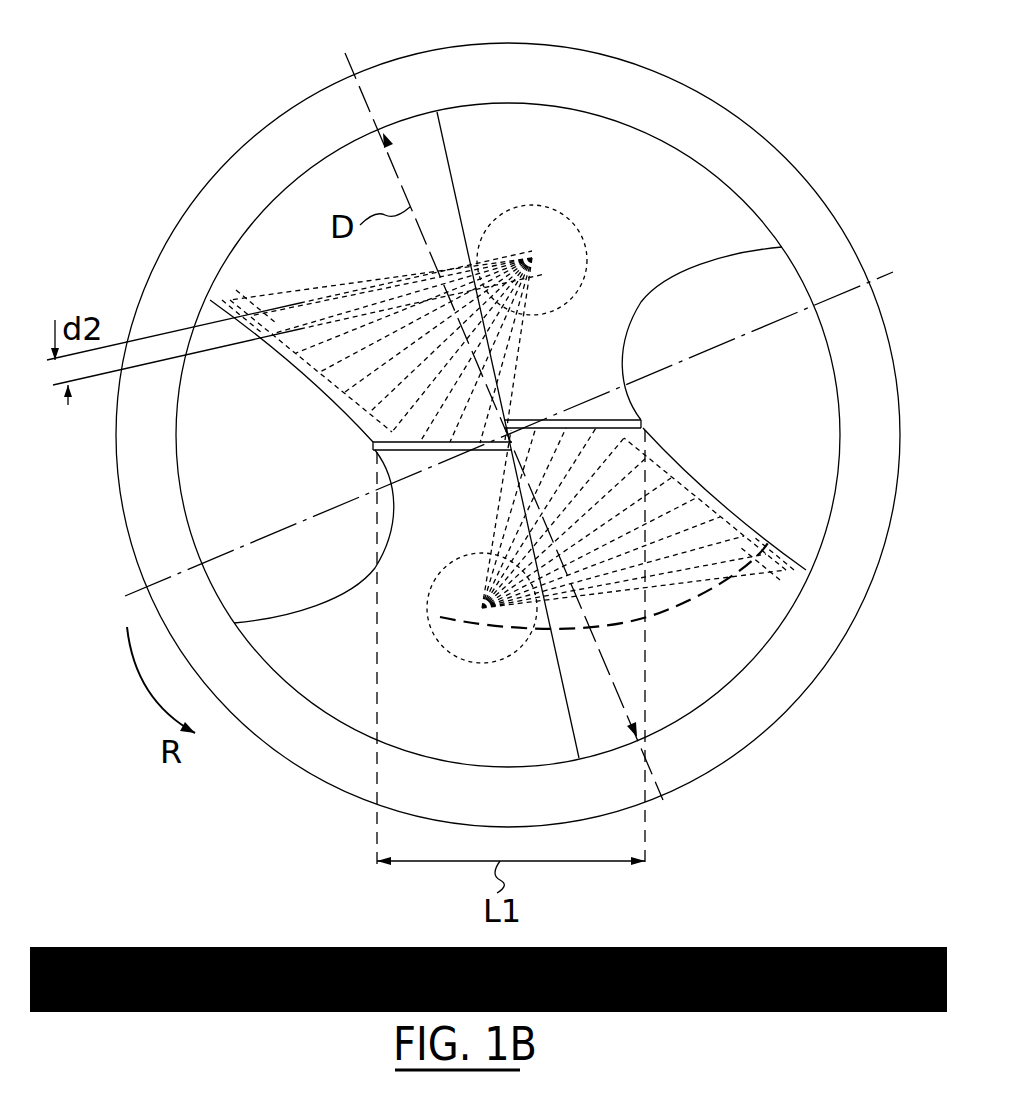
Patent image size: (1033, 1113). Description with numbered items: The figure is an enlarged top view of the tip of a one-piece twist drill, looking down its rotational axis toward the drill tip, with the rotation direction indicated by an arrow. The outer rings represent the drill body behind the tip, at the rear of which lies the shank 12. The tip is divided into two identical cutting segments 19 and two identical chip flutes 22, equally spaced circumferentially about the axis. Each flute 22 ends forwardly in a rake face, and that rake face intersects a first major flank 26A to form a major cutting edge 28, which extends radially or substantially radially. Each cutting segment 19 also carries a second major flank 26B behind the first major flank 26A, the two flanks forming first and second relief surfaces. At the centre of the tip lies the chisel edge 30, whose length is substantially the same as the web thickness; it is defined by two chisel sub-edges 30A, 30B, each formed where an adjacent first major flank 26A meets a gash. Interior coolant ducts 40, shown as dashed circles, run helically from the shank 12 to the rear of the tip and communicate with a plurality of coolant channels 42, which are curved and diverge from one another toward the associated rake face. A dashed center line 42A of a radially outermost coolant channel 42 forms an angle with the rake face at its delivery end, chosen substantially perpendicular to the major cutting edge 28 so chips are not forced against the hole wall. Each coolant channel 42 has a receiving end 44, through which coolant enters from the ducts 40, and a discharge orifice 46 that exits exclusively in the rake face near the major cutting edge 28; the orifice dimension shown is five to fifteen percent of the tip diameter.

The shank 12 is at (797, 172).
The cutting segment 19 is at (335, 430).
The chip flute 22 is at (807, 423).
The first major flank 26A is at (307, 188).
The second major flank 26B is at (590, 137).
The major cutting edge 28 is at (315, 385).
The chisel edge 30 is at (523, 413).
The chisel sub-edge 30A is at (605, 426).
The chisel sub-edge 30B is at (432, 450).
The coolant duct 40 is at (585, 258).
The coolant channel 42 is at (677, 572).
The center line of coolant channel 42A is at (725, 585).
The receiving end 44 is at (483, 615).
The discharge orifice 46 is at (708, 512).